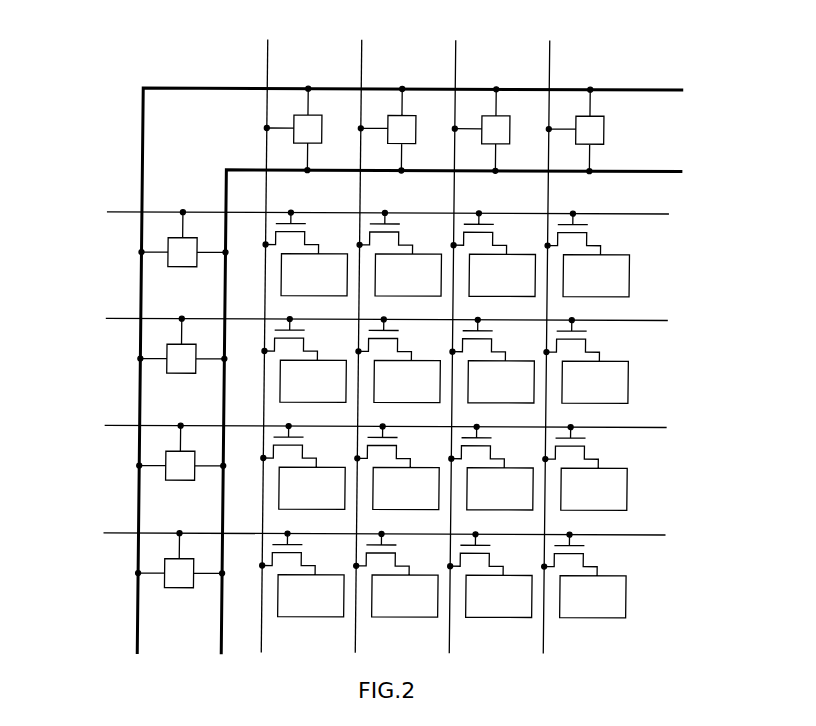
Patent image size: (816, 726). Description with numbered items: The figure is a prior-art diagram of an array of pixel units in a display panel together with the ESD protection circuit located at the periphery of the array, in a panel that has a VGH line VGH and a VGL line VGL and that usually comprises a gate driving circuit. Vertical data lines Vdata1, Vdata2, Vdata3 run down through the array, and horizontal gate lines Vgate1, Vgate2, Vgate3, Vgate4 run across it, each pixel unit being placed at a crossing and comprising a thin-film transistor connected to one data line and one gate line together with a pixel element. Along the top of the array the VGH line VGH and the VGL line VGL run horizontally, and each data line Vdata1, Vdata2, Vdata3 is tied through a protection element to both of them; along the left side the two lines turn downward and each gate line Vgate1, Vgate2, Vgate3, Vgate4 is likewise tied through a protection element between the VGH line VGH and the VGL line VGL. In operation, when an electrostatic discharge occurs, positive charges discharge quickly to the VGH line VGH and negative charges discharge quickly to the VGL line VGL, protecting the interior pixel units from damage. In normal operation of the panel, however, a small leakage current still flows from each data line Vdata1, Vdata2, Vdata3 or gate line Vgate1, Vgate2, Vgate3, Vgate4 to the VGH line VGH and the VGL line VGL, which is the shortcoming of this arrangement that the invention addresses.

The VGH line VGH is at (440, 365).
The VGL line VGL is at (480, 406).
The Vdata line Vdata1 is at (258, 334).
The Vdata line Vdata2 is at (352, 335).
The Vdata line Vdata3 is at (493, 335).
The Vgate line Vgate1 is at (345, 212).
The Vgate line Vgate2 is at (344, 319).
The Vgate line Vgate3 is at (343, 426).
The Vgate line Vgate4 is at (341, 533).